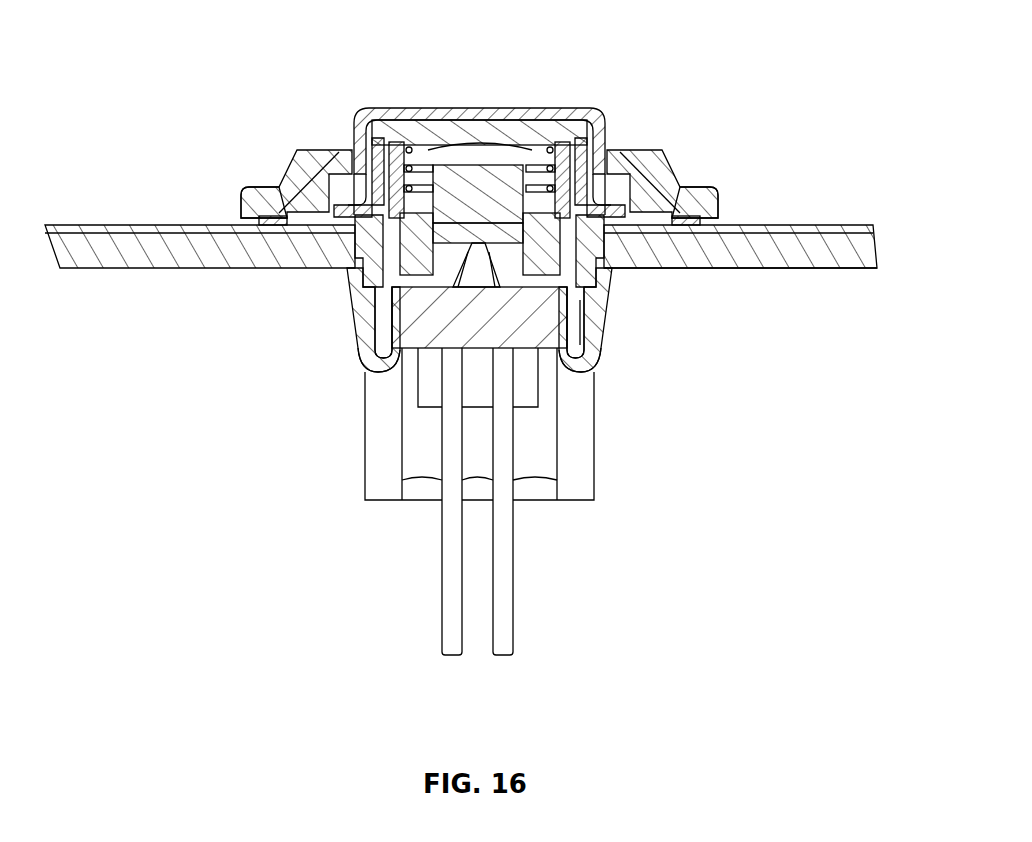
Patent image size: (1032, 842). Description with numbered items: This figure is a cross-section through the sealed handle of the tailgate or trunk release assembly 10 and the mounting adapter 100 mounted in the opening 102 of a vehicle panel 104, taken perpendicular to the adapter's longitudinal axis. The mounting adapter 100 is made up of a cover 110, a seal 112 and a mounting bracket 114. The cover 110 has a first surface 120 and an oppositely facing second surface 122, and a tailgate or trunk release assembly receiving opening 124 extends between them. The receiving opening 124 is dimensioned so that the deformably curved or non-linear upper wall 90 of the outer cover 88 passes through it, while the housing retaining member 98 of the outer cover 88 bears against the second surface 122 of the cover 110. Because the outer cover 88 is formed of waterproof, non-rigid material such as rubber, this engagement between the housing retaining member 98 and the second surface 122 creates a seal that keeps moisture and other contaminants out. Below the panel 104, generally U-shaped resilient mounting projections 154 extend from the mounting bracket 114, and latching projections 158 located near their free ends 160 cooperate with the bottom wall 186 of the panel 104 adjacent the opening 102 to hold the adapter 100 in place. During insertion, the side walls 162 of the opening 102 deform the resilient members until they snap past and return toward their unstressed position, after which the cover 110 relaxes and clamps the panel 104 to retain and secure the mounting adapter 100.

The tailgate or trunk release assembly 10 is at (478, 350).
The outer cover 88 is at (511, 137).
The upper wall 90 is at (558, 108).
The housing retaining member 98 is at (622, 168).
The mounting adapter 100 is at (468, 350).
The opening 102 is at (356, 268).
The panel 104 is at (815, 253).
The cover 110 is at (468, 199).
The seal 112 is at (270, 196).
The mounting bracket 114 is at (604, 376).
The first surface 120 is at (327, 147).
The second surface 122 is at (262, 228).
The tailgate or trunk release assembly receiving opening 124 is at (350, 204).
The resilient mounting projections 154 is at (362, 357).
The latching projections 158 is at (352, 287).
The free ends 160 is at (604, 240).
The side walls 162 is at (578, 355).
The bottom wall 186 is at (752, 268).